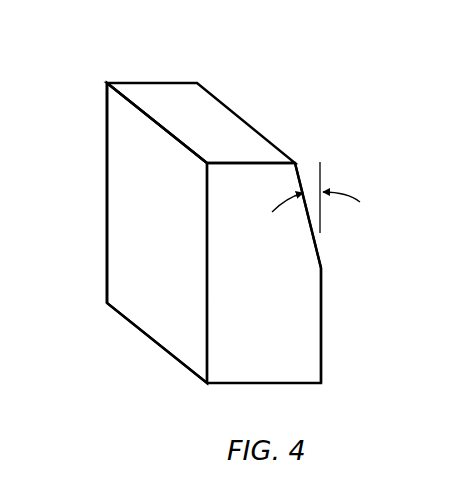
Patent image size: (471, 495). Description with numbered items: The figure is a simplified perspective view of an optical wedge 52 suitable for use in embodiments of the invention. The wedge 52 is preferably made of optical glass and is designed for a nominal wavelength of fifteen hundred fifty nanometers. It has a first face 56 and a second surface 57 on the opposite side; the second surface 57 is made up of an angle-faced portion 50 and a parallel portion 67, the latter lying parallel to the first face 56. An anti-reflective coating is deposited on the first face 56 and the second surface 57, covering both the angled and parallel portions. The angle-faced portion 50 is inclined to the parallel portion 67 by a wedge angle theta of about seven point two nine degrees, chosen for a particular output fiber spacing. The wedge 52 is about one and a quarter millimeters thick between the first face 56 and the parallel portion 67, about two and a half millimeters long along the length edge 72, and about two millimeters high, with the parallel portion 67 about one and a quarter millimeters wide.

The optical wedge 52 is at (247, 87).
The length edge 72 is at (107, 155).
The first face 56 is at (114, 242).
The angle-faced portion 50 is at (317, 247).
The second surface 57 is at (332, 178).
The parallel portion 67 is at (321, 342).